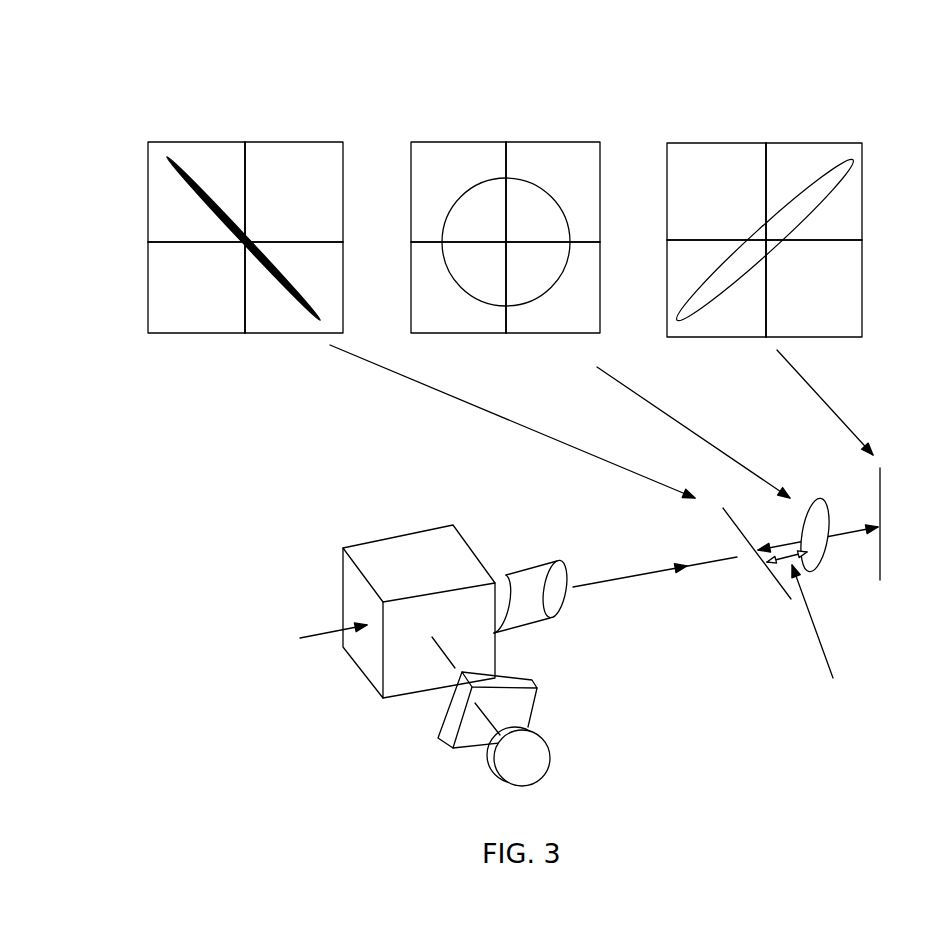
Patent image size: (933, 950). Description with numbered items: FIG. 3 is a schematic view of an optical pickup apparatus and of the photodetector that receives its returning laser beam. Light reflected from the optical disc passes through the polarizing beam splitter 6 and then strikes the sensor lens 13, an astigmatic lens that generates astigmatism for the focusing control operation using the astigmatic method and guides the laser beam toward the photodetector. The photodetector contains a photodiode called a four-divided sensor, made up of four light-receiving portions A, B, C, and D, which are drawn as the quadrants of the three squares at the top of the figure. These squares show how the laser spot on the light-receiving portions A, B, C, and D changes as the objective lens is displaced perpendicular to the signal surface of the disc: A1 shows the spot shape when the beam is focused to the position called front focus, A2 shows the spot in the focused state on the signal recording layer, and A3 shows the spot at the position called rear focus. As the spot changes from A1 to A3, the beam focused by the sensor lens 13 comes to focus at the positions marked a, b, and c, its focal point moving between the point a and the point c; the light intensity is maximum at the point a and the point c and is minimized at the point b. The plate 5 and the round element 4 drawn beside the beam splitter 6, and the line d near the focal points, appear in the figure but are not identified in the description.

The laser spot shape at front focus A1 is at (421, 254).
The laser spot shape in focused state A2 is at (600, 254).
The laser spot shape at rear focus A3 is at (770, 233).
The light-receiving portion A is at (213, 157).
The light-receiving portion B is at (308, 155).
The light-receiving portion C is at (273, 317).
The light-receiving portion D is at (180, 317).
The polarizing beam splitter 6 is at (388, 552).
The sensor lens 13 is at (533, 580).
The plate element 5 is at (520, 712).
The lens 4 is at (535, 760).
The focal point a is at (782, 588).
The focal point b is at (830, 583).
The focal point c is at (882, 573).
The optical axis direction line d is at (817, 635).